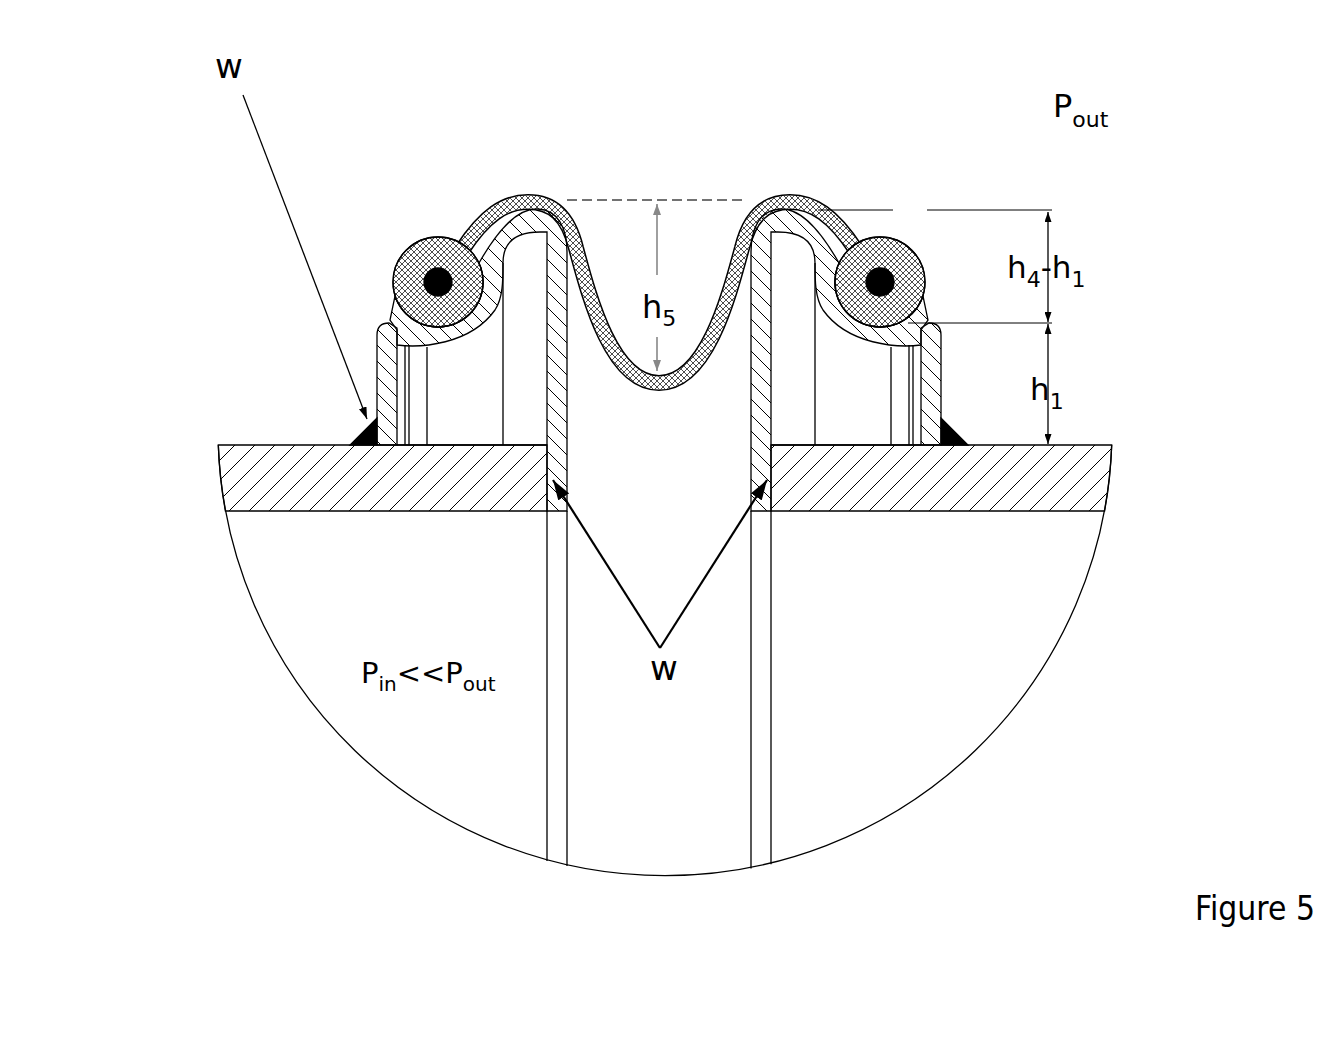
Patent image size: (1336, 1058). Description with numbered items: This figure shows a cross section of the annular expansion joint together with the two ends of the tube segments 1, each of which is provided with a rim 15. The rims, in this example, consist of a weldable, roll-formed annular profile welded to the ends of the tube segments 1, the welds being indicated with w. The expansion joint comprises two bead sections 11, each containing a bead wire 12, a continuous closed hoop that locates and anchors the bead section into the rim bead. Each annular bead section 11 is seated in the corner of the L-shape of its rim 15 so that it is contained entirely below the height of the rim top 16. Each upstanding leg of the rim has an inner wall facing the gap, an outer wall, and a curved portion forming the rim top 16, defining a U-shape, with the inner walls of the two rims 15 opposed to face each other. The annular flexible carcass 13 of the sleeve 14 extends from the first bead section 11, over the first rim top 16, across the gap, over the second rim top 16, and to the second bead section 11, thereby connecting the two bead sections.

The tube segment 1 is at (288, 441).
The bead section 11 is at (889, 246).
The bead wire 12 is at (440, 266).
The flexible carcass 13 is at (602, 299).
The sleeve 14 is at (790, 191).
The rim 15 is at (386, 327).
The rim top 16 is at (528, 196).